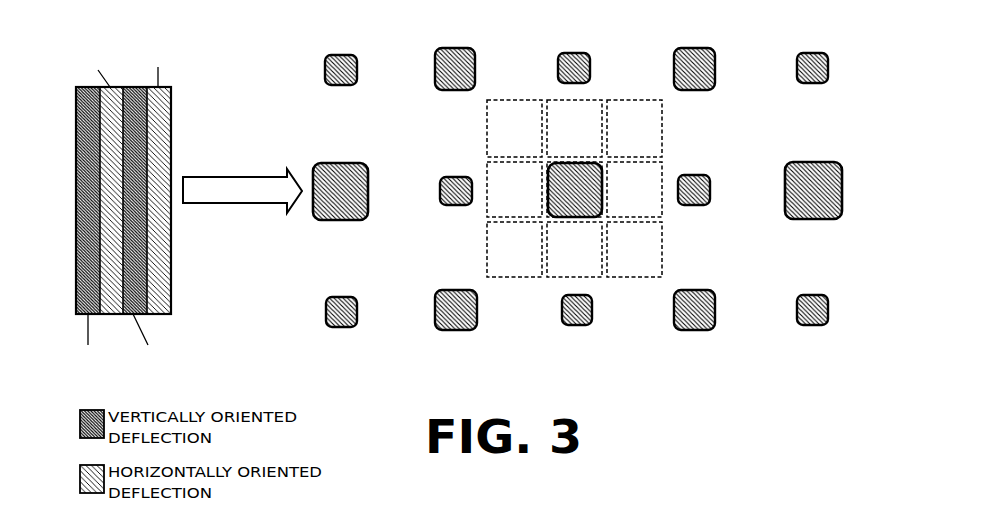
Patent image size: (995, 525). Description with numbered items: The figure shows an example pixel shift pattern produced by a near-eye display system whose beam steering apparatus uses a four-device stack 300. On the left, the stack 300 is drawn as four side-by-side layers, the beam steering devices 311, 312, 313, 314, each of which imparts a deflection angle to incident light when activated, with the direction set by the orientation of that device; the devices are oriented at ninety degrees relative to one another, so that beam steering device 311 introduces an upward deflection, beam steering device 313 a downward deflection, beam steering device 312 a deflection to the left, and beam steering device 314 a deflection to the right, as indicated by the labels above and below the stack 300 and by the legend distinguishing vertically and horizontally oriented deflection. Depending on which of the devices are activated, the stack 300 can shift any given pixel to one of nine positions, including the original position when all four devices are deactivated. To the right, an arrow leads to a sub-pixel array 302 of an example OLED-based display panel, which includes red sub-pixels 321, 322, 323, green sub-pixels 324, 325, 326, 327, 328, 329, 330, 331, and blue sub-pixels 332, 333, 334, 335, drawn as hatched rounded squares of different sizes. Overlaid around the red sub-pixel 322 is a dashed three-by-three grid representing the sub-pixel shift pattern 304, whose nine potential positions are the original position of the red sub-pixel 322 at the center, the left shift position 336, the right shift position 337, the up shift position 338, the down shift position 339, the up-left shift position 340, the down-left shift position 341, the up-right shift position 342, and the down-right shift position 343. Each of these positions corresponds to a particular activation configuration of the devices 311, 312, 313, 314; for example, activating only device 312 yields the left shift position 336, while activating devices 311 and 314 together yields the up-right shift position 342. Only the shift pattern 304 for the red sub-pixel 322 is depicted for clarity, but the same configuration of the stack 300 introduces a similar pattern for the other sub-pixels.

The four-device stack 300 is at (135, 209).
The beam steering device 311 is at (76, 170).
The beam steering device 312 is at (100, 203).
The beam steering device 313 is at (147, 145).
The beam steering device 314 is at (171, 113).
The sub-pixel array 302 is at (724, 43).
The sub-pixel shift pattern 304 is at (665, 121).
The red sub-pixel 321 is at (340, 163).
The red sub-pixel 322 is at (562, 197).
The red sub-pixel 323 is at (813, 162).
The green sub-pixel 324 is at (341, 55).
The green sub-pixel 325 is at (574, 53).
The green sub-pixel 326 is at (812, 53).
The green sub-pixel 327 is at (456, 177).
The green sub-pixel 328 is at (694, 175).
The green sub-pixel 329 is at (341, 297).
The green sub-pixel 330 is at (577, 325).
The green sub-pixel 331 is at (812, 295).
The blue sub-pixel 332 is at (455, 48).
The blue sub-pixel 333 is at (694, 48).
The blue sub-pixel 334 is at (456, 290).
The blue sub-pixel 335 is at (694, 290).
The left shift position 336 is at (502, 197).
The right shift position 337 is at (622, 197).
The up shift position 338 is at (562, 136).
The down shift position 339 is at (562, 257).
The up-left shift position 340 is at (502, 136).
The down-left shift position 341 is at (502, 257).
The up-right shift position 342 is at (622, 136).
The down-right shift position 343 is at (622, 257).